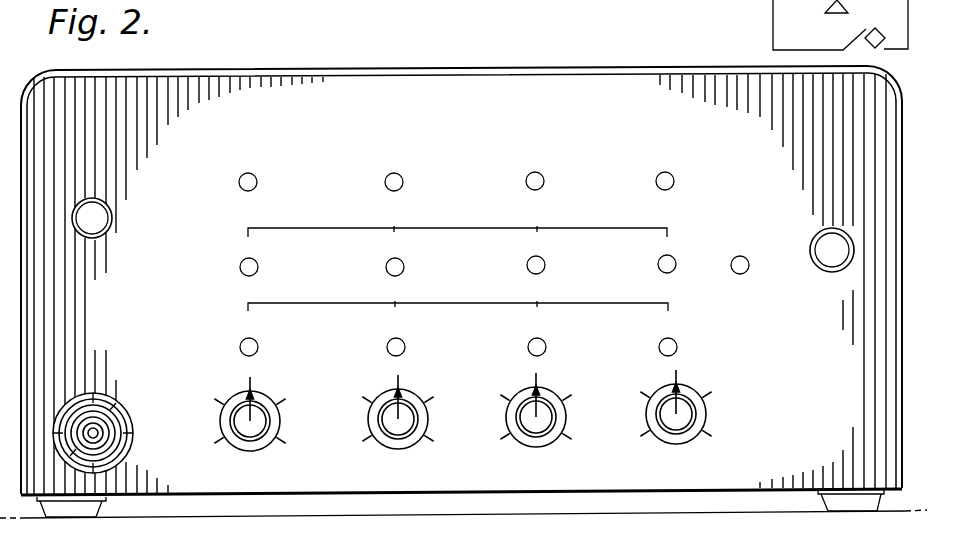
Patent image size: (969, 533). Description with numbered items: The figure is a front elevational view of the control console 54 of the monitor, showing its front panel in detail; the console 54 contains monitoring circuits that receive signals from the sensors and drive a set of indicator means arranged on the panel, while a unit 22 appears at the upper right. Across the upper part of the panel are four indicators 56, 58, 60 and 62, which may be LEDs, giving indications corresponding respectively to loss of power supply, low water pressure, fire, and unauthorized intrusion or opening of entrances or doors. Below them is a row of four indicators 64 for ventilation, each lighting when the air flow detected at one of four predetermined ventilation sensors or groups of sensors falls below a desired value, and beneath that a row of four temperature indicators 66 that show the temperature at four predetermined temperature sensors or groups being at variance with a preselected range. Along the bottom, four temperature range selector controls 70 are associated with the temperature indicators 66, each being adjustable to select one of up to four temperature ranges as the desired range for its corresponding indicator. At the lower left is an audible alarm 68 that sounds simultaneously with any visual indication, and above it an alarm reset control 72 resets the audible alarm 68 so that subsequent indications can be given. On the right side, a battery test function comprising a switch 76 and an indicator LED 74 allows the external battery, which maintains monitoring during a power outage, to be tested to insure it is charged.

The monitor circuit unit 22 is at (772, 5).
The console 54 is at (318, 36).
The indicator 56 is at (257, 181).
The indicator 58 is at (403, 181).
The indicator 60 is at (544, 180).
The indicator 62 is at (674, 180).
The indicators 64 is at (232, 271).
The temperature indicators 66 is at (231, 348).
The audible alarm 68 is at (158, 404).
The temperature range selector controls 70 is at (208, 427).
The alarm reset control 72 is at (90, 237).
The indicator LED 74 is at (736, 274).
The switch 76 is at (826, 272).